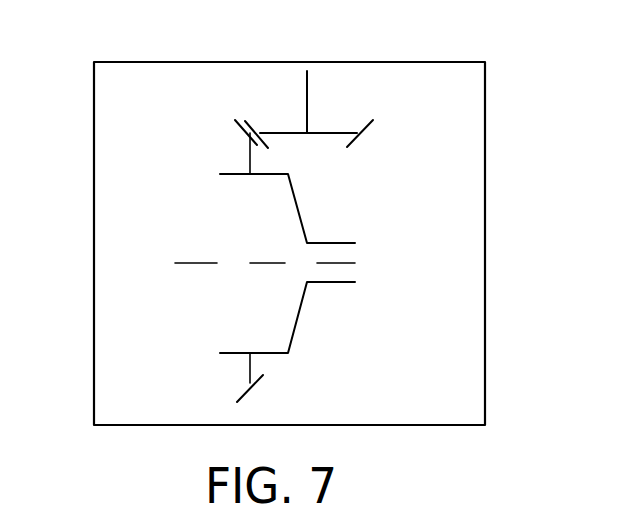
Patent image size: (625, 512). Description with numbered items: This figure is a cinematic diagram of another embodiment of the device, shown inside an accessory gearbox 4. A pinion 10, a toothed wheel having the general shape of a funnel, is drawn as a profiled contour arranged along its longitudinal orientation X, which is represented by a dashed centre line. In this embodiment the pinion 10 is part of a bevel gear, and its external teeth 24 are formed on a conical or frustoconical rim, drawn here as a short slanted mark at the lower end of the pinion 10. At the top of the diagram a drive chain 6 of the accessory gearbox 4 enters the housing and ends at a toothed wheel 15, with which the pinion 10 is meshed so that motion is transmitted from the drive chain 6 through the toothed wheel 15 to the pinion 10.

The accessory gearbox 4 is at (93, 110).
The drive chain 6 is at (330, 86).
The toothed wheel 15 is at (308, 108).
The pinion 10 is at (298, 205).
The longitudinal orientation X is at (187, 262).
The external teeth 24 is at (258, 382).